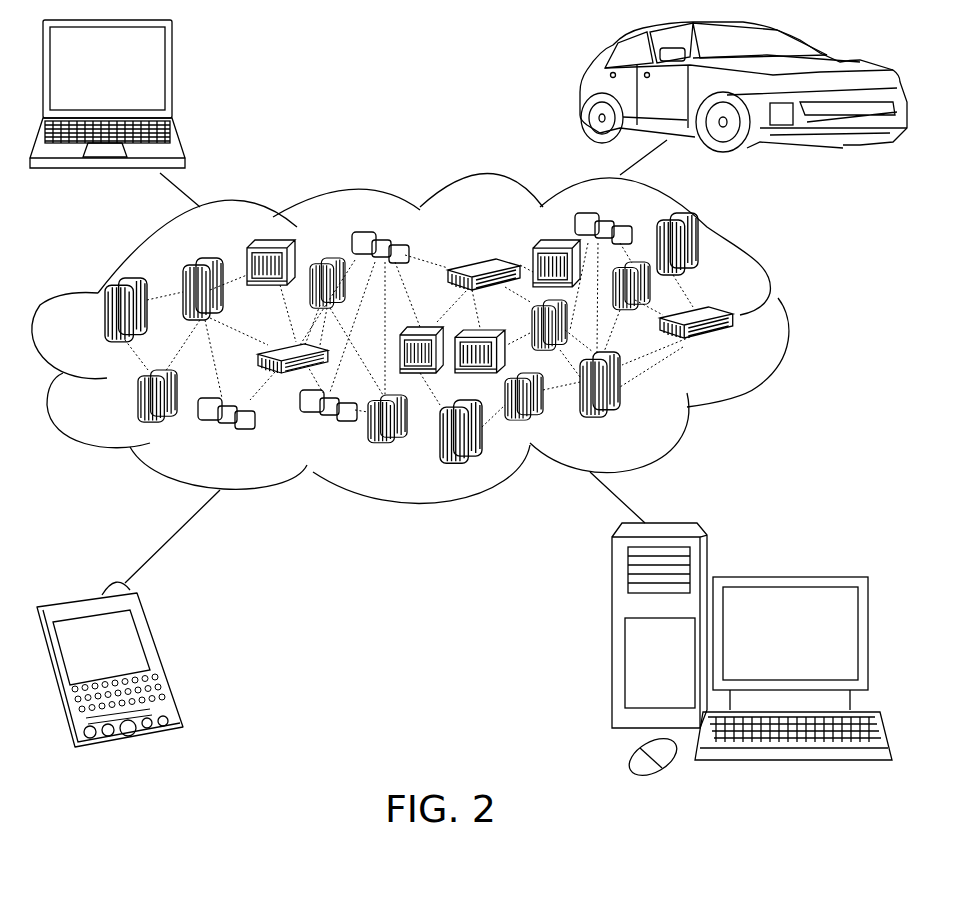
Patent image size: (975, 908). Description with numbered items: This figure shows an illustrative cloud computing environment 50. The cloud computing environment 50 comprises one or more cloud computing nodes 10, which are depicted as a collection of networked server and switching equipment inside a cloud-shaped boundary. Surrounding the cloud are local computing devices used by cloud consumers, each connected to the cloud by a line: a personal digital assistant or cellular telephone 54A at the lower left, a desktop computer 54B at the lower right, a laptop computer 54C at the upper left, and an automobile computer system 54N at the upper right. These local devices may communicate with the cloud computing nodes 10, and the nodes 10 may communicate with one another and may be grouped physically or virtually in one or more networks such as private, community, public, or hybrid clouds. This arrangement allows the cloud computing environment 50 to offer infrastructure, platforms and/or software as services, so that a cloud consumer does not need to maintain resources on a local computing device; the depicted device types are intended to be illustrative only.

The laptop computer 54C is at (172, 72).
The automobile computer system 54N is at (583, 98).
The personal digital assistant (PDA) or cellular telephone 54A is at (160, 658).
The desktop computer 54B is at (790, 577).
The cloud computing environment 50 is at (789, 318).
The cloud computing nodes 10 is at (735, 345).